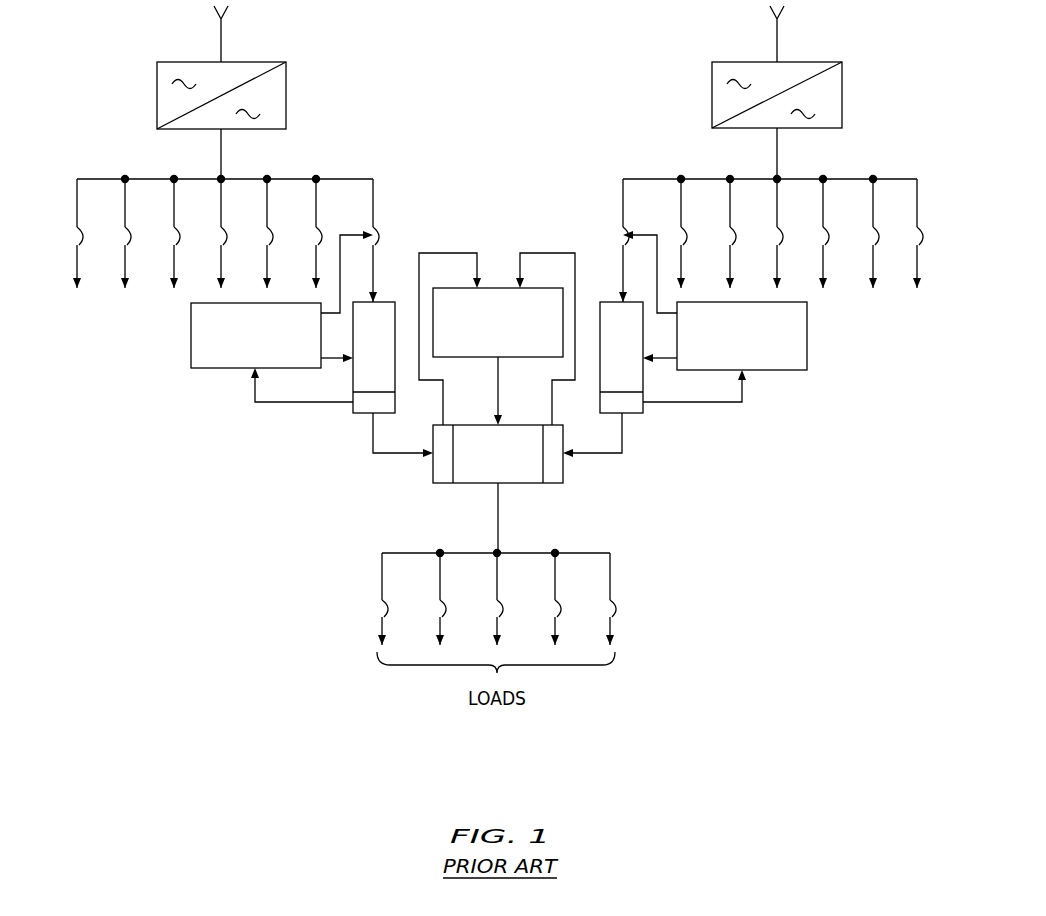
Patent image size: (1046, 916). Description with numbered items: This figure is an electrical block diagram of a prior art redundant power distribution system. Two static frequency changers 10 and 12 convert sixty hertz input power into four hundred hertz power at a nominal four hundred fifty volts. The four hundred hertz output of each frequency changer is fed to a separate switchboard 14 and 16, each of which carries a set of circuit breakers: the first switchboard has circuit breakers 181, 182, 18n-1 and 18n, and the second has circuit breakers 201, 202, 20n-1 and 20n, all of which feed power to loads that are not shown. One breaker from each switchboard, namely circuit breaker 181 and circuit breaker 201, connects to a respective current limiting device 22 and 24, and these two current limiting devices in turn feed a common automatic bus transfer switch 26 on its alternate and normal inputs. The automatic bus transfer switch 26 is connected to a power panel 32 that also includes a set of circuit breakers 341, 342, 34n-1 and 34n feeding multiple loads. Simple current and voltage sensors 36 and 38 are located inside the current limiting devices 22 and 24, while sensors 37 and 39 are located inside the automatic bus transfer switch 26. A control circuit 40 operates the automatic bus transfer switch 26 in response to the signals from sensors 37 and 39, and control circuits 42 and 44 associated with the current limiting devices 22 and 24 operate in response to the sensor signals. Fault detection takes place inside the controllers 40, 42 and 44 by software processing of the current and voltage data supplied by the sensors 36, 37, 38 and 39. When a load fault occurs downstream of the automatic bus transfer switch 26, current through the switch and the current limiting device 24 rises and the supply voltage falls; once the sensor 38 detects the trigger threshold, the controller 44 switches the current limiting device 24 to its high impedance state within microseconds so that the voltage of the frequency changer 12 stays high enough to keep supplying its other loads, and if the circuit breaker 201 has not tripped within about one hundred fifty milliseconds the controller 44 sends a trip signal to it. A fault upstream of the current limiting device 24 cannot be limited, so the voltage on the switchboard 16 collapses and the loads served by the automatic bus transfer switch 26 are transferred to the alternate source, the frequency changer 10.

The static frequency changer 10 is at (287, 90).
The static frequency changer 12 is at (843, 90).
The switchboard 14 is at (338, 178).
The switchboard 16 is at (647, 178).
The circuit breaker 18n is at (82, 229).
The circuit breaker 18n-1 is at (123, 236).
The circuit breaker 182 is at (321, 229).
The circuit breaker 181 is at (378, 229).
The circuit breaker 201 is at (628, 229).
The circuit breaker 202 is at (687, 229).
The circuit breaker 20n-1 is at (878, 240).
The circuit breaker 20n is at (921, 229).
The current limiting device 22 is at (386, 300).
The current limiting device 24 is at (610, 300).
The automatic bus transfer switch 26 is at (504, 475).
The power panel 32 is at (603, 551).
The circuit breaker 341 is at (386, 602).
The circuit breaker 342 is at (444, 602).
The circuit breaker 34n-1 is at (559, 602).
The circuit breaker 34n is at (614, 602).
The sensor 36 is at (353, 416).
The sensor 37 is at (442, 487).
The sensor 38 is at (633, 417).
The sensor 39 is at (557, 487).
The control circuit 40 is at (513, 358).
The control circuit 42 is at (210, 370).
The control circuit 44 is at (770, 372).